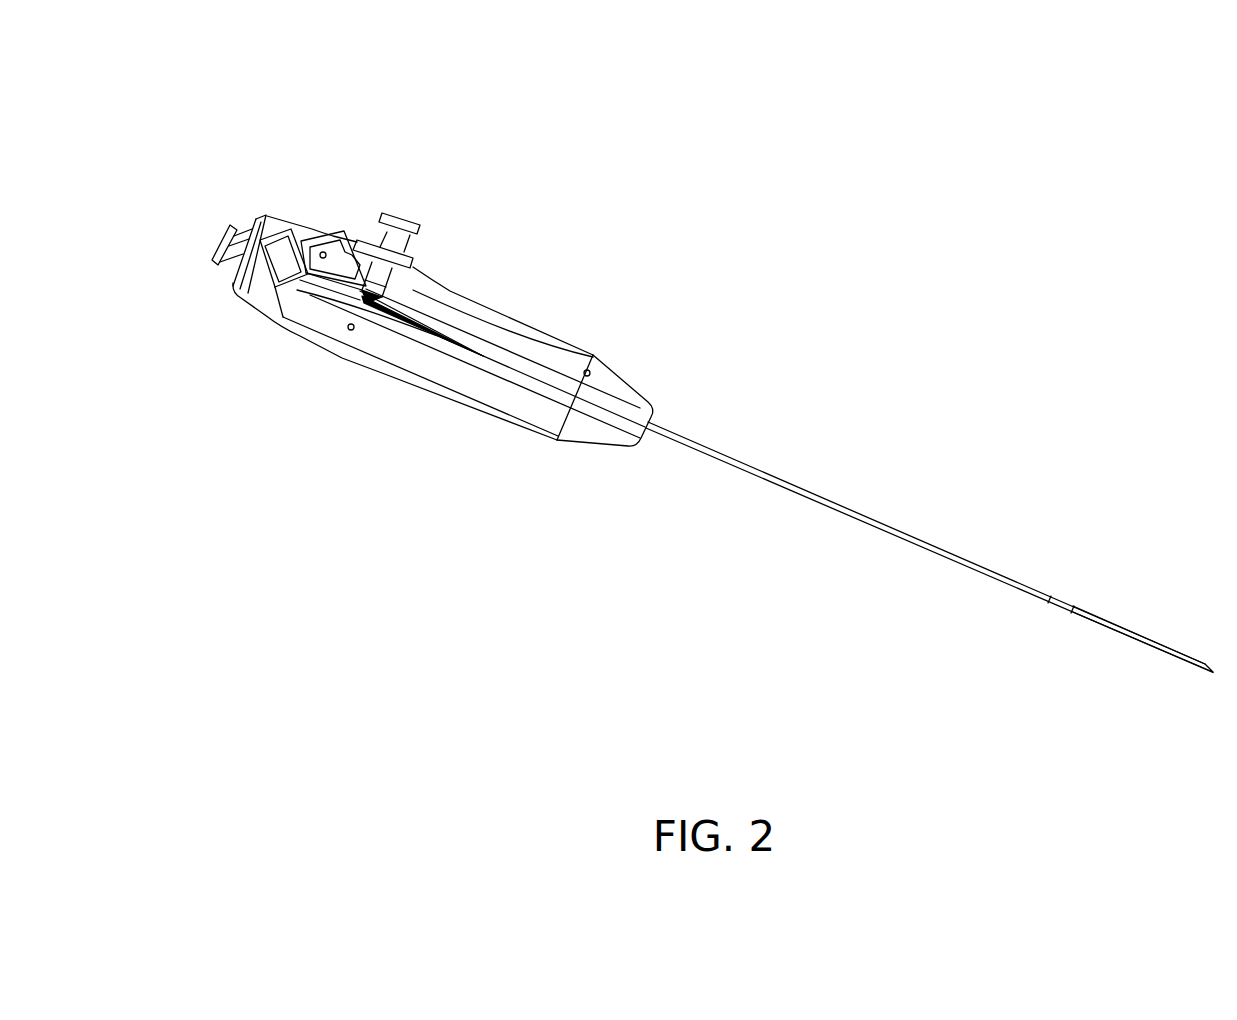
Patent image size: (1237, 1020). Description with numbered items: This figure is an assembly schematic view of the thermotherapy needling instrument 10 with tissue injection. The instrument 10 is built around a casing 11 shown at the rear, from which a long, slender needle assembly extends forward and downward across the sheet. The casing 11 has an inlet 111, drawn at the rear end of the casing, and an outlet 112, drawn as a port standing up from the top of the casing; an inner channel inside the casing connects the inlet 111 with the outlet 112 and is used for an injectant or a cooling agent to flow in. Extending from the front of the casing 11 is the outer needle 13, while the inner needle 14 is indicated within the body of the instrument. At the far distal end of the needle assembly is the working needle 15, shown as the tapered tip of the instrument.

The thermotherapy needling instrument 10 is at (917, 195).
The casing 11 is at (543, 333).
The inlet 111 is at (214, 244).
The outlet 112 is at (402, 214).
The outer needle 13 is at (723, 462).
The inner needle 14 is at (396, 322).
The working needle 15 is at (1128, 635).